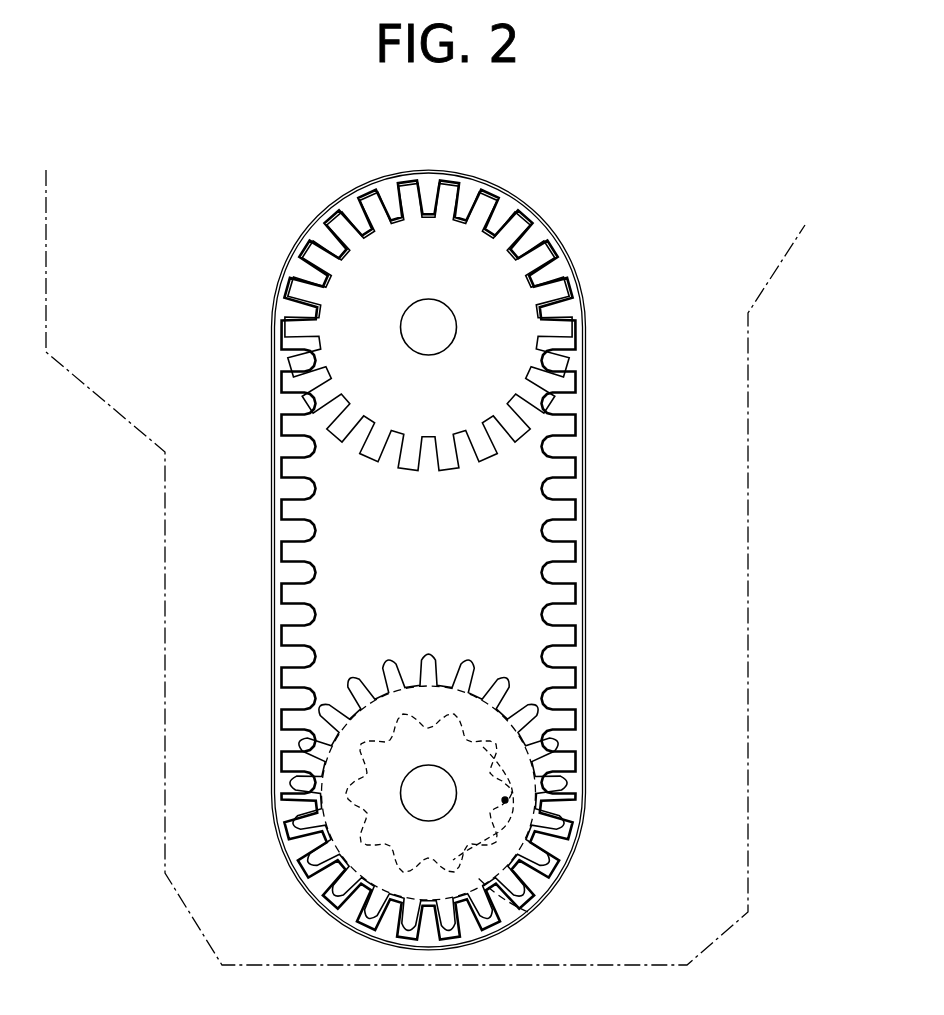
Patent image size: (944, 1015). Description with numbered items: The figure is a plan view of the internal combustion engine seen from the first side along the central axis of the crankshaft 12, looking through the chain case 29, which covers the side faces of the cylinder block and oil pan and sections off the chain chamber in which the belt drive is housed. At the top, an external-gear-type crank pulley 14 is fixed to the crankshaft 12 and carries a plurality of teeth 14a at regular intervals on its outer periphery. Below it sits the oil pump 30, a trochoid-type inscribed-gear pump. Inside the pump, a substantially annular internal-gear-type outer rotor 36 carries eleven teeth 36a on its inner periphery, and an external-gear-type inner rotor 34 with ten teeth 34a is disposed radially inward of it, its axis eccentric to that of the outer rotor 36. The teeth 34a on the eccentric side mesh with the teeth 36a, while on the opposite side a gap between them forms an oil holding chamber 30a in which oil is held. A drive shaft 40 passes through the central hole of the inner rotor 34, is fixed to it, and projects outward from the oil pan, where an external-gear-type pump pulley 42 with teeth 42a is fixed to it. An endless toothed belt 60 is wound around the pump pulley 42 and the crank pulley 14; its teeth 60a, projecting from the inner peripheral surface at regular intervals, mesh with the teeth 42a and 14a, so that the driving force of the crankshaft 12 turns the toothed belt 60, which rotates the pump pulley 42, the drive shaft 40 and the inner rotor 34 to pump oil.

The crankshaft 12 is at (433, 311).
The crank pulley 14 is at (428, 354).
The teeth of the crank pulley 14a is at (449, 468).
The chain case 29 is at (748, 472).
The oil pump 30 is at (453, 822).
The oil holding chamber 30a is at (548, 823).
The inner rotor 34 is at (313, 877).
The teeth of the inner rotor 34a is at (528, 911).
The outer rotor 36 is at (540, 789).
The teeth of the outer rotor 36a is at (558, 746).
The drive shaft 40 is at (433, 783).
The pump pulley 42 is at (428, 769).
The teeth of the pump pulley 42a is at (412, 662).
The toothed belt 60 is at (461, 560).
The teeth of the toothed belt 60a is at (317, 656).